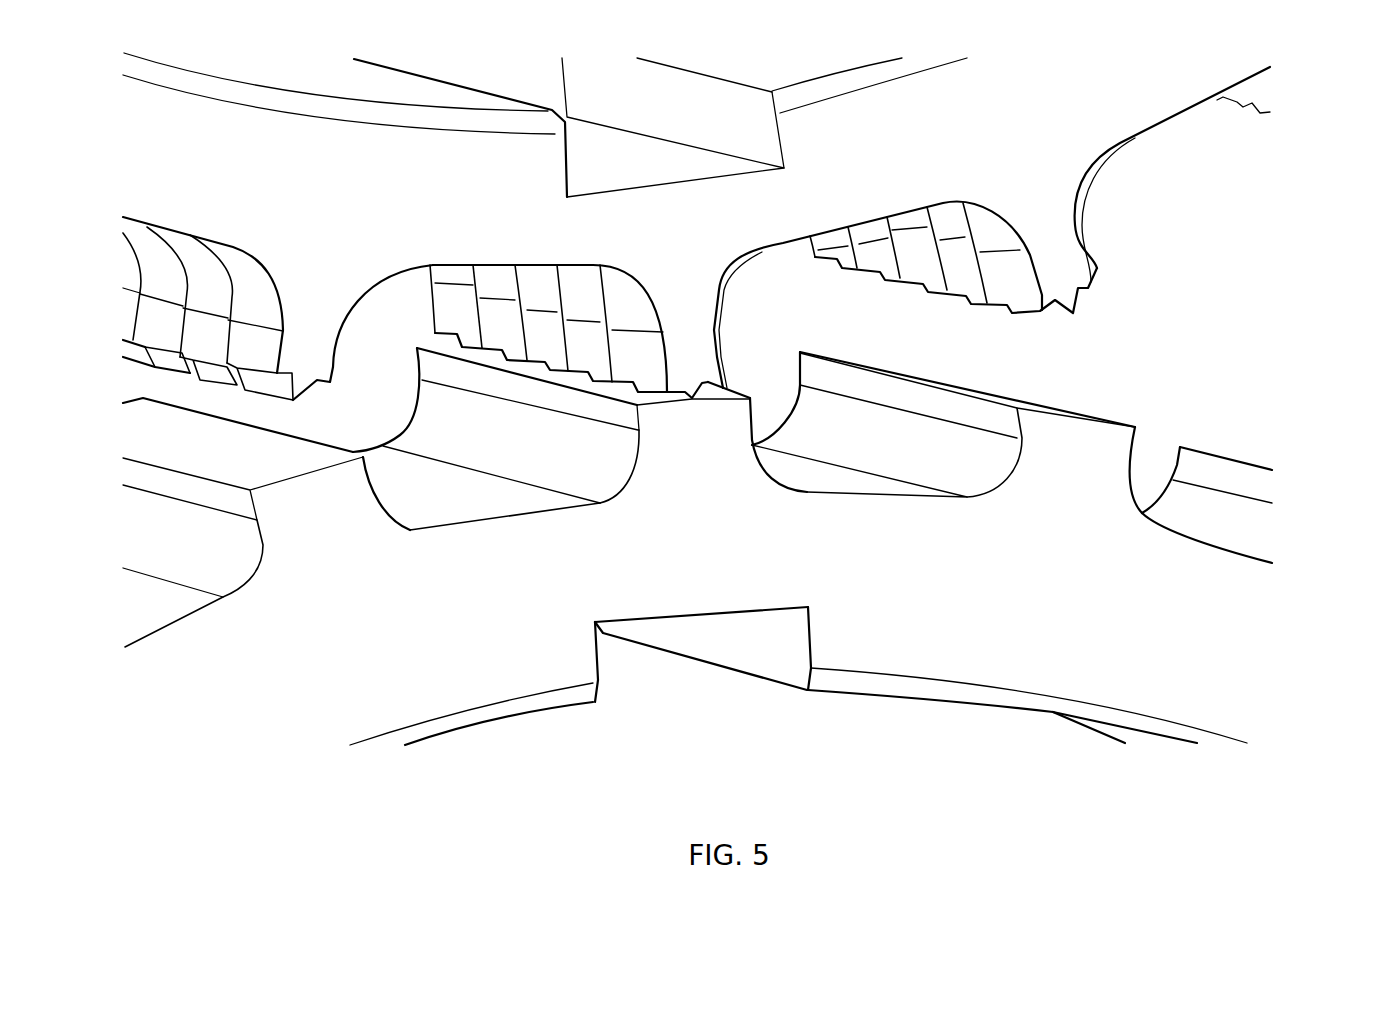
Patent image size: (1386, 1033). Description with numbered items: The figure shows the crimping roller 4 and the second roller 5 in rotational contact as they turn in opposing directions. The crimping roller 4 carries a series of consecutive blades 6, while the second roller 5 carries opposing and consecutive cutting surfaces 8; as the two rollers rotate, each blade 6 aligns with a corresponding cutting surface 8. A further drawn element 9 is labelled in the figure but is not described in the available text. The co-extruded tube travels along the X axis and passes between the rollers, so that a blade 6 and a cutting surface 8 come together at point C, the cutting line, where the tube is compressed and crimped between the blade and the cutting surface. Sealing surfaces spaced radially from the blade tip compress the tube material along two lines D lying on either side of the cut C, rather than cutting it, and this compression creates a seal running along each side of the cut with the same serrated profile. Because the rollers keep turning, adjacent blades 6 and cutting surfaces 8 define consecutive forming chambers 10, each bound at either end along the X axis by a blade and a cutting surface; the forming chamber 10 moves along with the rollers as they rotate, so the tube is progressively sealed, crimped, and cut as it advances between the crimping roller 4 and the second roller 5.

The crimping roller 4 is at (1052, 80).
The second roller 5 is at (1103, 420).
The blades 6 is at (1077, 308).
The cutting surfaces 8 is at (300, 477).
The rotor blade platform 9 is at (483, 500).
The forming chamber 10 is at (892, 338).
The cutting line C is at (692, 402).
The compression lines D is at (664, 405).
The X axis X is at (1257, 300).